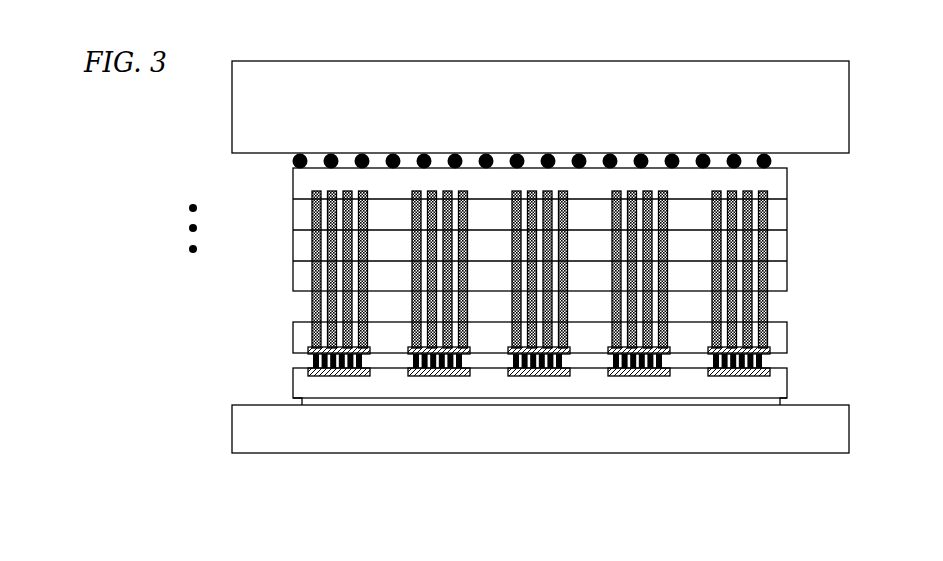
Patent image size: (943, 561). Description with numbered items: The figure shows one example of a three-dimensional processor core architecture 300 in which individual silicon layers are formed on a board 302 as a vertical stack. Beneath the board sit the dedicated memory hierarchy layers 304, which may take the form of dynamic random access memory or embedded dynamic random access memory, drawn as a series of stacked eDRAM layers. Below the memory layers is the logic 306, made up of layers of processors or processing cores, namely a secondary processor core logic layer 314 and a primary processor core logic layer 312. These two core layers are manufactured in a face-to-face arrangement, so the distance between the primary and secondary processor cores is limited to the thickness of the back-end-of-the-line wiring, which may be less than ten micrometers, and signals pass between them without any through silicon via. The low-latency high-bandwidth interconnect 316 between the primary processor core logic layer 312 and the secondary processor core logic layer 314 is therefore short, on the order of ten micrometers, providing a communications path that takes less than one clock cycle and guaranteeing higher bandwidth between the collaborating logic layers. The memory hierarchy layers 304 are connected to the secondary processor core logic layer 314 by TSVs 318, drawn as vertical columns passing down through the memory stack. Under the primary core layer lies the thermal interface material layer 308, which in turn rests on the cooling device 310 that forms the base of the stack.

The three-dimensional processor core architecture 300 is at (143, 128).
The board 302 is at (291, 61).
The memory hierarchy layers 304 is at (125, 173).
The logic 306 is at (88, 320).
The thermal interface material layer 308 is at (785, 403).
The cooling device 310 is at (310, 455).
The primary processor core logic layer 312 is at (788, 385).
The secondary processor core logic layer 314 is at (788, 338).
The low-latency high-bandwidth interconnect 316 is at (780, 361).
The TSVs 318 is at (765, 312).